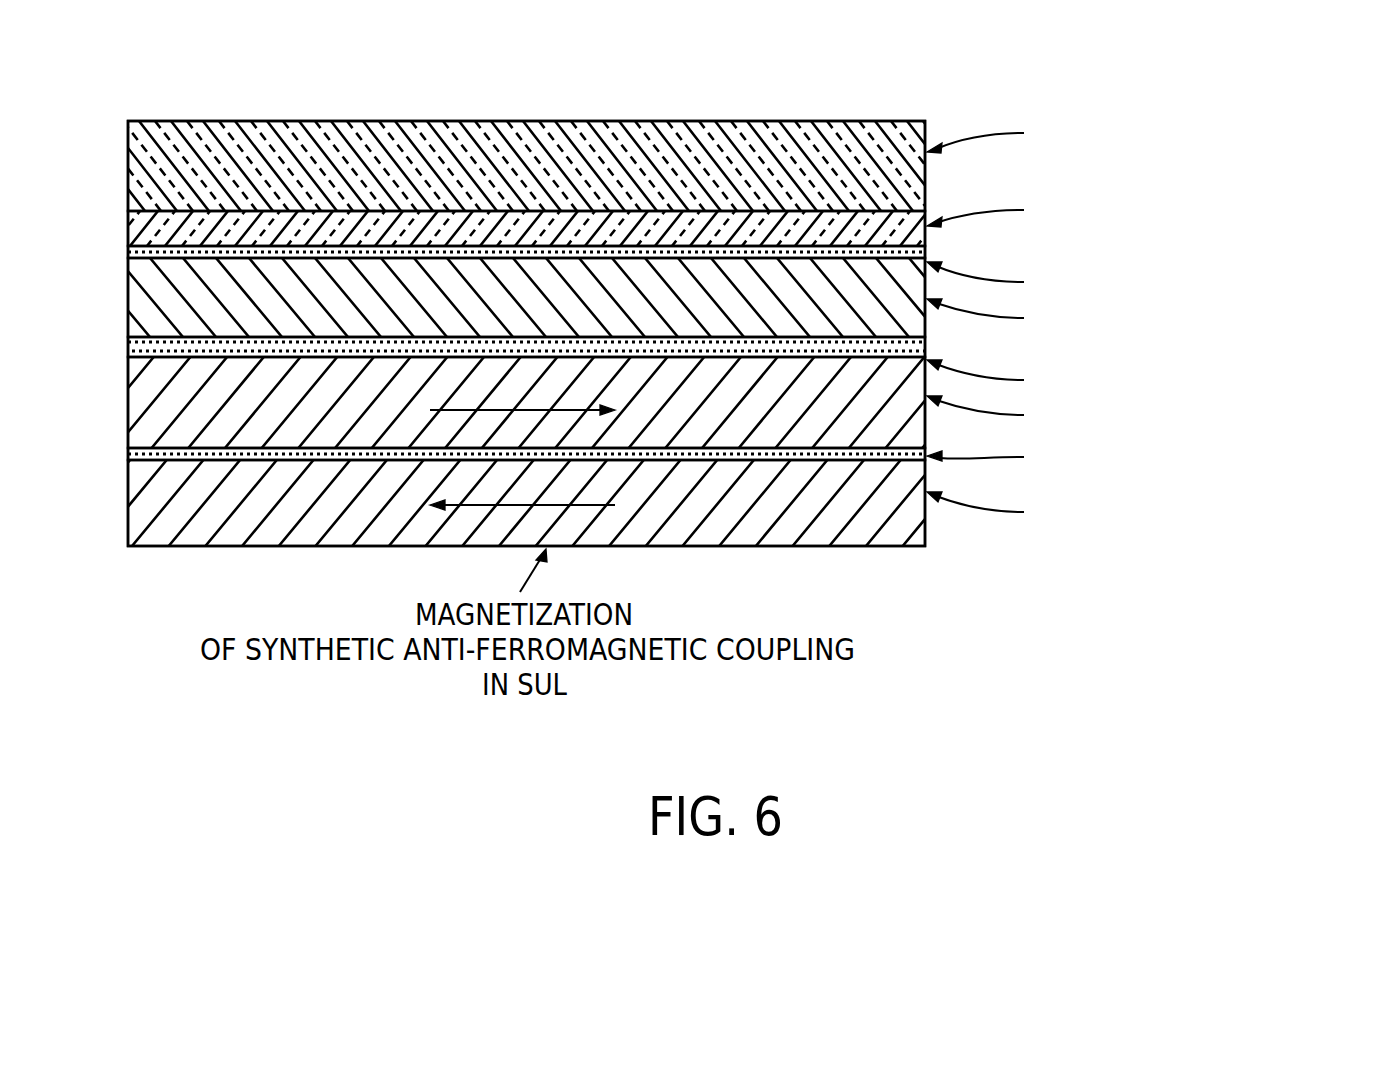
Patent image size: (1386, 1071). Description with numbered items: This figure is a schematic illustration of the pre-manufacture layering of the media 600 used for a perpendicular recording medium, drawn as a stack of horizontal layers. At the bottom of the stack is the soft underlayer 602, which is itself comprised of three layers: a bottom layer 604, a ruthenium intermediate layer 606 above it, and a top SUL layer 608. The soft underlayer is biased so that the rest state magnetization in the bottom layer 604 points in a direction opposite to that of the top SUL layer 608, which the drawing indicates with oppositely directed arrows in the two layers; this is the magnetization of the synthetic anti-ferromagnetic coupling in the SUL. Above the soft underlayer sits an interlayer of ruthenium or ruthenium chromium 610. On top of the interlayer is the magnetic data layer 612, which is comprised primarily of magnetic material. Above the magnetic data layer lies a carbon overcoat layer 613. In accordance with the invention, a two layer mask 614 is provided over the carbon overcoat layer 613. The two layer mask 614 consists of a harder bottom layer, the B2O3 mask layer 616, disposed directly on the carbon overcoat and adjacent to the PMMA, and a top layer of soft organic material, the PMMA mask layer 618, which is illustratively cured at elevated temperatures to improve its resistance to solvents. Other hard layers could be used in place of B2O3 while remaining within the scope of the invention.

The media 600 is at (790, 90).
The soft underlayer 602 is at (121, 360).
The bottom layer 604 is at (927, 532).
The ruthenium intermediate layer 606 is at (927, 480).
The top SUL layer 608 is at (927, 433).
The interlayer of ruthenium or ruthenium chromium 610 is at (927, 346).
The magnetic data layer 612 is at (128, 296).
The carbon overcoat layer 613 is at (128, 252).
The two layer mask 614 is at (122, 122).
The B2O3 mask layer 616 is at (927, 242).
The PMMA mask layer 618 is at (927, 183).